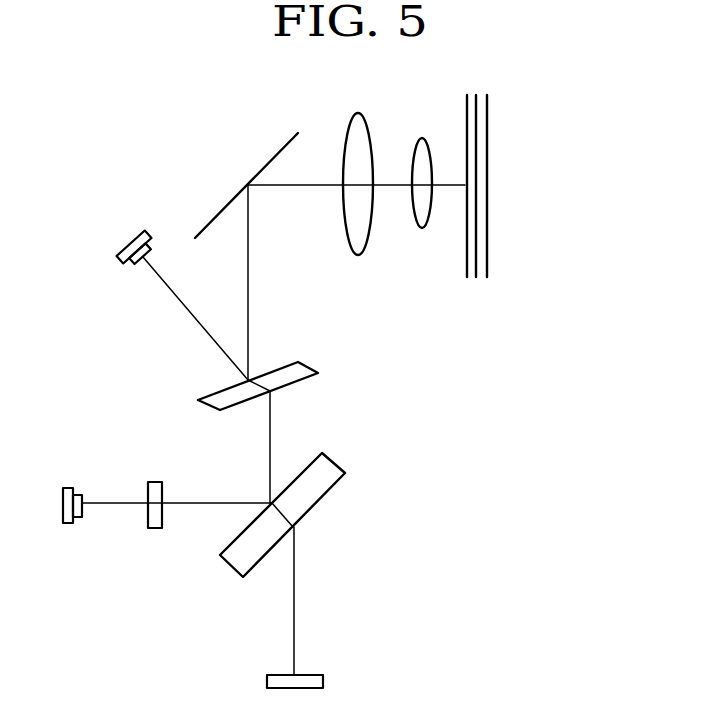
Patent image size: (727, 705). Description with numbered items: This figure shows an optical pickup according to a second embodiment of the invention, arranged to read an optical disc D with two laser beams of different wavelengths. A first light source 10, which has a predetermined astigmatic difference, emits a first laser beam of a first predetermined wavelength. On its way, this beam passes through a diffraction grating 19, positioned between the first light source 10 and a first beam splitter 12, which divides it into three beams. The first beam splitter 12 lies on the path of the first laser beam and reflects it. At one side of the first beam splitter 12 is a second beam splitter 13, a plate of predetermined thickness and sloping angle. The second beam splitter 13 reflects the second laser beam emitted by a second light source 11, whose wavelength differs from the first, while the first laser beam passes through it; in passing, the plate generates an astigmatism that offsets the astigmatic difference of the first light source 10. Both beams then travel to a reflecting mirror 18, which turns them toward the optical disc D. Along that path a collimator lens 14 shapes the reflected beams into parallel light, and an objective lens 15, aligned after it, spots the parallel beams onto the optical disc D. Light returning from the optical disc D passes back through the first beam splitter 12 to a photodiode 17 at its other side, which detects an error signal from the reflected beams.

The first light source 10 is at (74, 523).
The diffraction grating 19 is at (155, 530).
The first beam splitter 12 is at (317, 503).
The photodiode 17 is at (323, 683).
The second beam splitter 13 is at (293, 385).
The second light source 11 is at (132, 240).
The reflecting mirror 18 is at (228, 205).
The collimator lens 14 is at (347, 238).
The objective lens 15 is at (412, 225).
The optical disc D is at (487, 230).